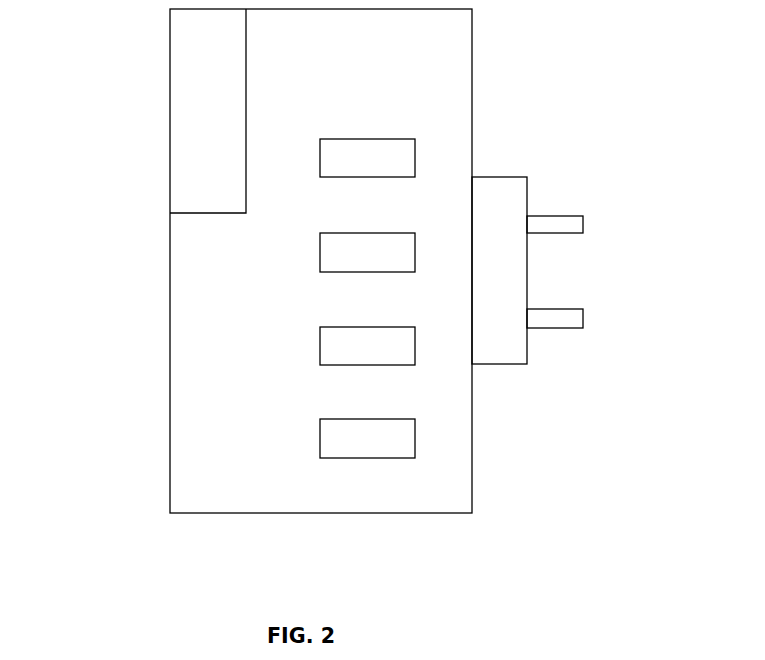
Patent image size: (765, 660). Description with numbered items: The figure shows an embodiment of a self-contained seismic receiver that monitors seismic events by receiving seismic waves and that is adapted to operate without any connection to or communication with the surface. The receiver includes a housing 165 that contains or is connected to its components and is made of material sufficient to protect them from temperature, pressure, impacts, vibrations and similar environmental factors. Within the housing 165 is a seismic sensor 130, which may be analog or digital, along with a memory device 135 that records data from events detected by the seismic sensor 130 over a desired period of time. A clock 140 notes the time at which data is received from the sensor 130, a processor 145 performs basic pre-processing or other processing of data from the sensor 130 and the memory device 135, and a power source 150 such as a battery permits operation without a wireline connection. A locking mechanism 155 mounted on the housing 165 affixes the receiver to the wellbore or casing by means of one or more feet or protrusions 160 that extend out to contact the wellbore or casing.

The seismic sensor 130 is at (190, 43).
The memory device 135 is at (367, 158).
The clock 140 is at (367, 252).
The processor 145 is at (367, 346).
The power source 150 is at (367, 438).
The locking mechanism 155 is at (489, 194).
The protrusions 160 is at (584, 228).
The housing 165 is at (170, 361).